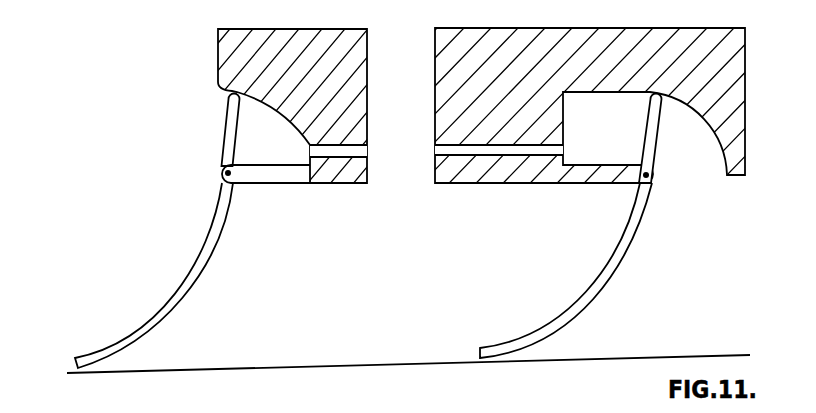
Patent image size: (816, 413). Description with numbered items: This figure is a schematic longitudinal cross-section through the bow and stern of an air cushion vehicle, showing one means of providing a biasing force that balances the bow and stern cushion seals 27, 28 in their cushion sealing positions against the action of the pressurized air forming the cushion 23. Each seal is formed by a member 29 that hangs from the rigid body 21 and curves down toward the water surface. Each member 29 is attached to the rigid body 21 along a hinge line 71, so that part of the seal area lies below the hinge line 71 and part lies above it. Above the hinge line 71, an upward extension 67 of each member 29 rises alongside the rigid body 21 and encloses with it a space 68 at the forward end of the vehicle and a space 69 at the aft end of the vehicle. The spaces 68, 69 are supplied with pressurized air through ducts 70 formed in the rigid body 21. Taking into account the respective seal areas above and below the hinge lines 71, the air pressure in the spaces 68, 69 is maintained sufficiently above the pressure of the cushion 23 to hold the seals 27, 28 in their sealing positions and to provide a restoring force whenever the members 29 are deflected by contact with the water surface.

The rigid body 21 is at (260, 70).
The cushion 23 is at (421, 296).
The bow cushion seal 27 is at (628, 299).
The stern cushion seal 28 is at (263, 326).
The member 29 is at (205, 265).
The upward extension 67 is at (230, 135).
The space 68 is at (620, 151).
The space 69 is at (285, 149).
The duct 70 is at (338, 150).
The hinge line 71 is at (227, 174).